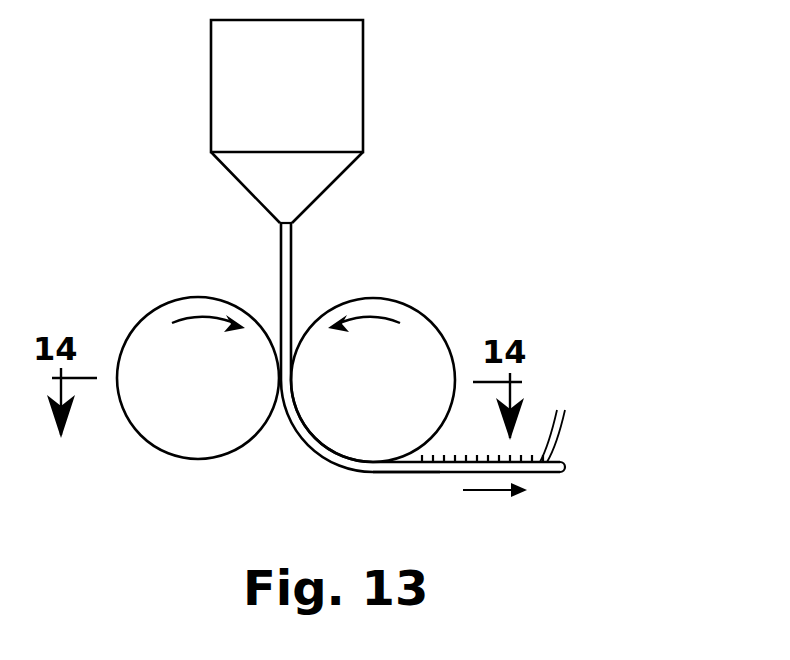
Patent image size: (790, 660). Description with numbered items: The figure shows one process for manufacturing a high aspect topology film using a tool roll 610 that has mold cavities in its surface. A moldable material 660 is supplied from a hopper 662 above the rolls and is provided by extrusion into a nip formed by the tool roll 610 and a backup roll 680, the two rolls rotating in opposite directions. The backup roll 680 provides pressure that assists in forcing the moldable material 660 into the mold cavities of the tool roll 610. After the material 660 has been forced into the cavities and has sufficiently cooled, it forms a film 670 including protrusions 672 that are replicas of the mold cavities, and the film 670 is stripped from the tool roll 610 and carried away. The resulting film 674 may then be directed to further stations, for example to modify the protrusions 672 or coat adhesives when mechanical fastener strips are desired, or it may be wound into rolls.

The hopper 662 is at (352, 66).
The moldable material 660 is at (285, 258).
The backup roll 680 is at (143, 337).
The tool roll 610 is at (427, 330).
The film 670 is at (560, 467).
The protrusions 672 is at (567, 422).
The film 674 is at (404, 475).